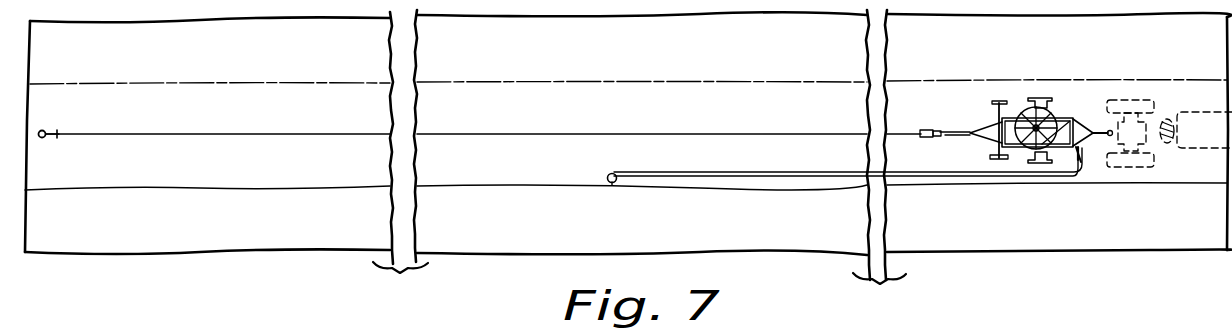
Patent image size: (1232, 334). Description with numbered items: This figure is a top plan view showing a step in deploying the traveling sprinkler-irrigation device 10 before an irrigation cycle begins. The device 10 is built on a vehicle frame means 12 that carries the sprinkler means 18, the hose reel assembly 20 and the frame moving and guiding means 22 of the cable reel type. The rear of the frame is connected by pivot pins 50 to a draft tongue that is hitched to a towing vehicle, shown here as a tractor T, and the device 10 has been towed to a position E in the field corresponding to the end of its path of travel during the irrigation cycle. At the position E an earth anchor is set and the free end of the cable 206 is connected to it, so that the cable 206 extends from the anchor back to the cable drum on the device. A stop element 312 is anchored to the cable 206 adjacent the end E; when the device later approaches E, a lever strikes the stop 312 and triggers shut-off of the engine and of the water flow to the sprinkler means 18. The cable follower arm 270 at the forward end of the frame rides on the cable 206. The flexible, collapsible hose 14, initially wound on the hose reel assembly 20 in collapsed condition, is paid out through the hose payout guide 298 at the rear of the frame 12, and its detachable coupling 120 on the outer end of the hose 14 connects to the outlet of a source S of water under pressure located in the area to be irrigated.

The traveling sprinkler-irrigation device 10 is at (1031, 131).
The vehicle frame means 12 is at (1022, 151).
The flexible, collapsible hose 14 is at (838, 181).
The sprinkler means 18 is at (1064, 153).
The hose reel assembly 20 is at (1021, 105).
The frame moving and guiding means 22 is at (988, 121).
The pivot pins 50 is at (1099, 106).
The detachable coupling 120 is at (608, 175).
The cable 206 is at (276, 133).
The cable follower arm 270 is at (986, 143).
The hose payout guide 298 is at (1088, 160).
The stop element 312 is at (59, 134).
The end position E is at (41, 128).
The source of water under pressure S is at (614, 184).
The towing vehicle (phantom) T is at (1140, 93).